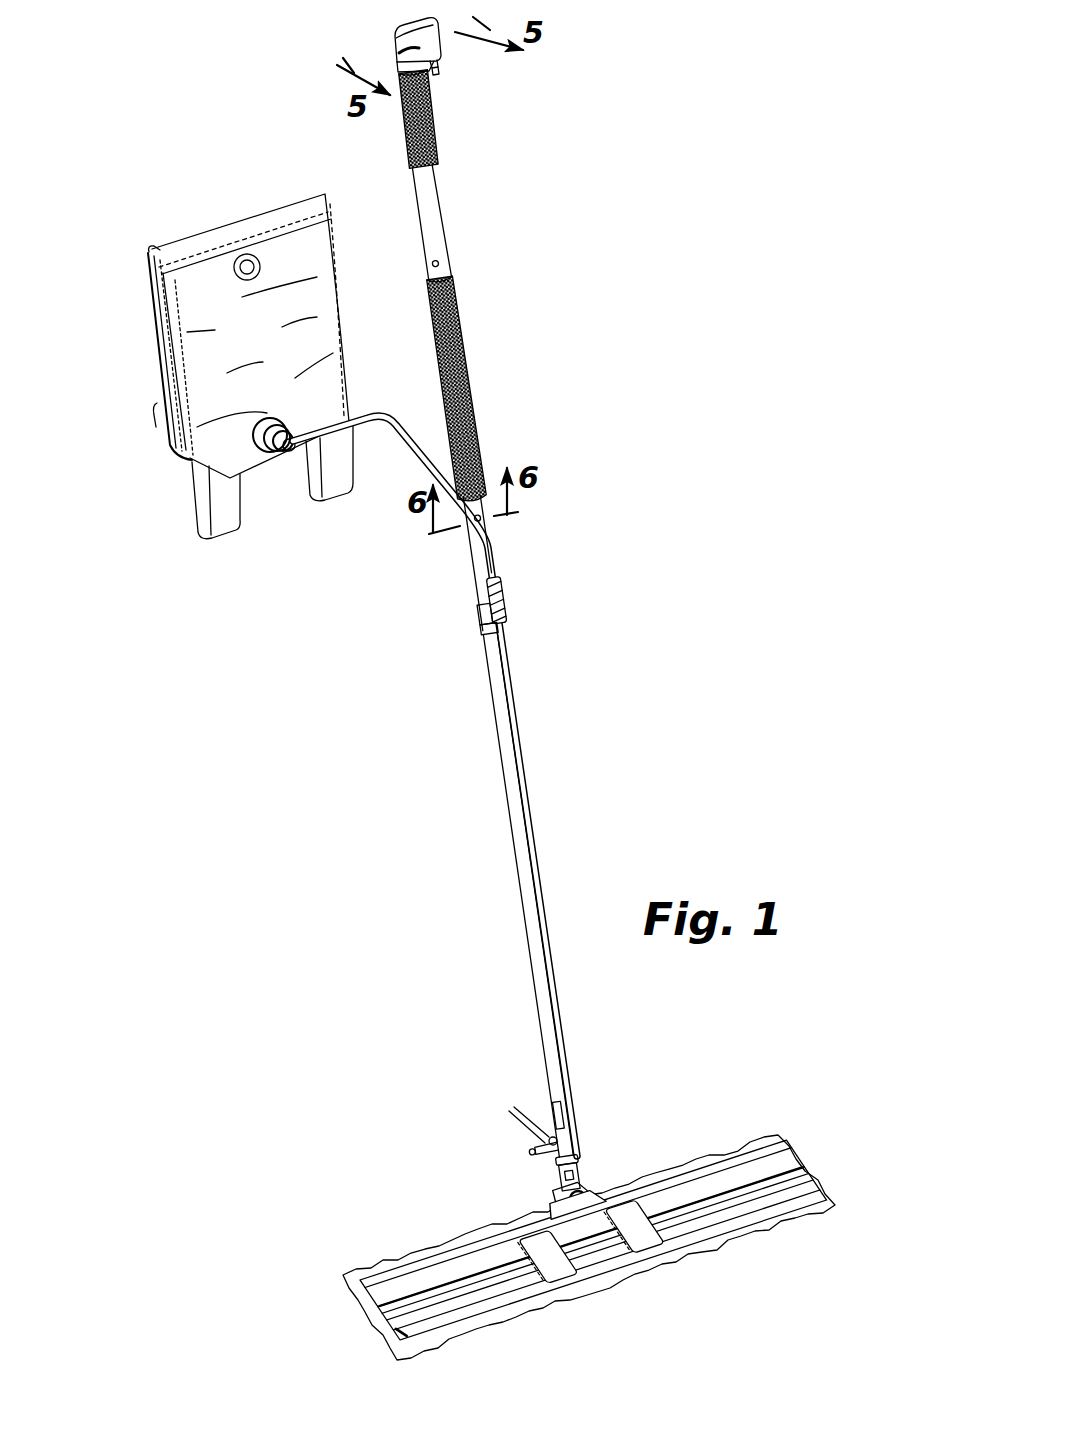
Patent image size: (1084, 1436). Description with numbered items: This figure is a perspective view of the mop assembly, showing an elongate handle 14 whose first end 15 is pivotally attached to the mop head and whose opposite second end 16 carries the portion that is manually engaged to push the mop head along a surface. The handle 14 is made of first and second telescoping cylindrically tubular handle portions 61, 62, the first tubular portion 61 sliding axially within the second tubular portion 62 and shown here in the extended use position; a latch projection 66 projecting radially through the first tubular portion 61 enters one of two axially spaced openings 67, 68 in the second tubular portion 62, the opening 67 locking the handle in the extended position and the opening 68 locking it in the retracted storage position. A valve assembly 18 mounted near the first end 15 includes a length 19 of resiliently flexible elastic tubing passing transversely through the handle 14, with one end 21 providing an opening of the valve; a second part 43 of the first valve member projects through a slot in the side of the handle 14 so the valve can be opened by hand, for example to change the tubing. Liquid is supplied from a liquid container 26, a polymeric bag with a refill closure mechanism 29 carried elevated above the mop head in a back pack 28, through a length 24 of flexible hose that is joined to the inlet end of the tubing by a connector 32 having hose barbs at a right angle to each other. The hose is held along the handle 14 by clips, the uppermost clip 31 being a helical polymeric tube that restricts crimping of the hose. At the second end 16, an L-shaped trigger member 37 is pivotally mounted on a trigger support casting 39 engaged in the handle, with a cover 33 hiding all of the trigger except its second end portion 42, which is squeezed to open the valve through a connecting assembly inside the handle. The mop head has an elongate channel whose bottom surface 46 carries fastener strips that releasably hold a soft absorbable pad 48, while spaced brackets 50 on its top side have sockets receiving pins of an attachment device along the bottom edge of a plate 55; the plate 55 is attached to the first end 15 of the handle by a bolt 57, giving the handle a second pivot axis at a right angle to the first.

The elongate handle 14 is at (483, 648).
The first end of the handle 15 is at (551, 1057).
The second end of the handle 16 is at (441, 176).
The valve assembly 18 is at (569, 1140).
The length of resiliently flexible elastic tubing 19 is at (536, 1132).
The end of the length of tubing 21 is at (508, 1114).
The length of flexible hose 24 is at (506, 644).
The liquid container 26 is at (276, 453).
The back pack 28 is at (181, 367).
The closure mechanism 29 is at (246, 253).
The uppermost clip 31 is at (506, 598).
The connector 32 is at (582, 1160).
The cover 33 is at (412, 26).
The L-shaped trigger member 37 is at (441, 59).
The trigger support casting 39 is at (402, 56).
The second end portion of the trigger member 42 is at (437, 76).
The second part of the first valve member 43 is at (551, 1137).
The bottom surface of the channel 46 is at (388, 1336).
The soft absorbable pad 48 is at (803, 1163).
The spaced brackets 50 is at (646, 1246).
The plate 55 is at (563, 1210).
The bolt 57 is at (586, 1194).
The first tubular handle portion 61 is at (538, 965).
The second tubular handle portion 62 is at (473, 565).
The projection 66 is at (483, 521).
The opening 67 is at (488, 497).
The opening 68 is at (444, 263).